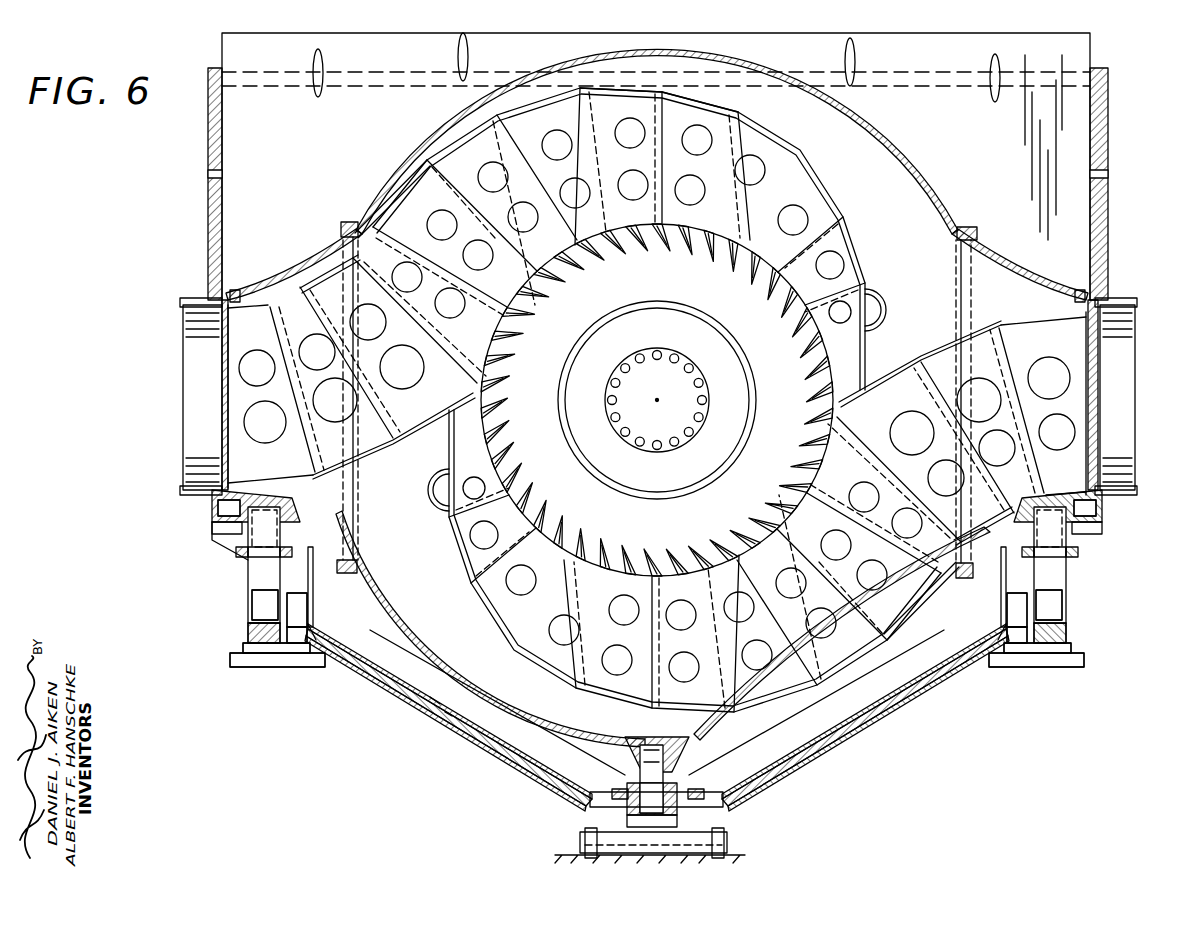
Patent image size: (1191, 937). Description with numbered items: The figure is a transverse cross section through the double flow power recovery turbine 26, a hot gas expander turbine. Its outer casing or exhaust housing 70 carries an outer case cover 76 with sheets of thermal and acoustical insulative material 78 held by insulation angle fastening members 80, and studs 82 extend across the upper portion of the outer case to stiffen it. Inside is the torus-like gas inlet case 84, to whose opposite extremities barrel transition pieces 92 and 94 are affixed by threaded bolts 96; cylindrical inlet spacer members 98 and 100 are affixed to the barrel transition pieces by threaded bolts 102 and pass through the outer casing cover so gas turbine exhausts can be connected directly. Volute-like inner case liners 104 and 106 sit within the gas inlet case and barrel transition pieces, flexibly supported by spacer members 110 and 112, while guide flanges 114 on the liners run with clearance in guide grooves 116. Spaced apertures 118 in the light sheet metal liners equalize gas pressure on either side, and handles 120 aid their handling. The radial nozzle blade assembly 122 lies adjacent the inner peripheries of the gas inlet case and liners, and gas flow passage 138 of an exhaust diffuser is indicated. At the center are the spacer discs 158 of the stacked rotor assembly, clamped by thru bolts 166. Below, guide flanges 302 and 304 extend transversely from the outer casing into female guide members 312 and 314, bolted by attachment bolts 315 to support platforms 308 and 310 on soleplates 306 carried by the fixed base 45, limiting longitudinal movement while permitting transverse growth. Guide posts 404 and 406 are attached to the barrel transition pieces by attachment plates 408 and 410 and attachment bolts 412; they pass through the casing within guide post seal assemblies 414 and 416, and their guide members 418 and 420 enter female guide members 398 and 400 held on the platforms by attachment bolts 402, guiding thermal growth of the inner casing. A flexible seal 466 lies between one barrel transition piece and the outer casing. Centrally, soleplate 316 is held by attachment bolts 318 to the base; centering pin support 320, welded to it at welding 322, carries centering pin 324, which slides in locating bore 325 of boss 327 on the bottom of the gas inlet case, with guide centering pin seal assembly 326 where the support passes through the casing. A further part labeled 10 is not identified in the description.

The power recovery turbine 26 is at (1104, 128).
The outer casing 70 is at (1092, 174).
The studs 82 is at (320, 97).
The gas inlet case 84 is at (897, 152).
The barrel transition piece 92 is at (283, 284).
The barrel transition piece 94 is at (1033, 279).
The threaded bolts 96 is at (349, 222).
The inlet spacer member 98 is at (184, 300).
The inlet spacer member 100 is at (1122, 304).
The threaded bolts 102 is at (212, 298).
The inner case liner 104 is at (712, 110).
The inner case liner 106 is at (632, 690).
The spacer member 110 is at (322, 270).
The spacer member 112 is at (250, 485).
The guide flanges 114 is at (183, 332).
The guide grooves 116 is at (246, 292).
The spaced apertures 118 is at (762, 168).
The handles 120 is at (436, 490).
The radial nozzle blade assembly 122 is at (701, 254).
The gas flow passage 138 is at (553, 422).
The spacer discs 158 is at (728, 332).
The thru bolts 166 is at (680, 352).
The bracket 10 is at (298, 530).
The attachment bolts 412 is at (278, 478).
The flexible seal 466 is at (216, 506).
The attachment plate 408 is at (228, 535).
The guide post 404 is at (228, 563).
The guide post seal assembly 414 is at (247, 581).
The guide member 418 is at (250, 613).
The female guide member 398 is at (250, 632).
The attachment bolts 402 is at (250, 650).
The support platform 308 is at (252, 658).
The soleplates 306 is at (276, 670).
The attachment bolts 315 is at (300, 656).
The female guide member 312 is at (318, 642).
The guide flange 302 is at (303, 610).
The outer case cover 76 is at (404, 684).
The insulative material 78 is at (437, 702).
The insulation angle fastening members 80 is at (448, 718).
The guide centering pin seal assembly 326 is at (613, 772).
The locating bore 325 is at (650, 745).
The boss 327 is at (690, 770).
The centering pin 324 is at (679, 796).
The attachment bolts 318 is at (580, 838).
The centering pin support 320 is at (627, 822).
The welding 322 is at (718, 842).
The soleplate 316 is at (730, 842).
The fixed base 45 is at (528, 839).
The attachment plate 410 is at (1100, 506).
The guide post 406 is at (1088, 560).
The guide post seal assembly 416 is at (1079, 574).
The guide member 420 is at (1064, 610).
The female guide member 400 is at (1064, 628).
The support platform 310 is at (1072, 650).
The female guide member 314 is at (1000, 645).
The guide flange 304 is at (1006, 612).